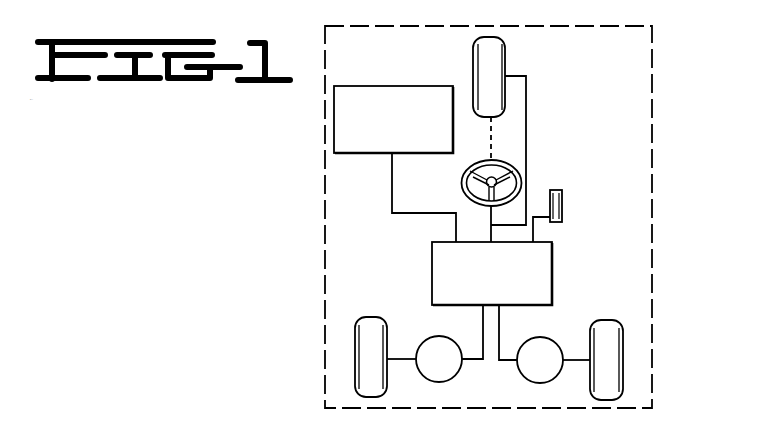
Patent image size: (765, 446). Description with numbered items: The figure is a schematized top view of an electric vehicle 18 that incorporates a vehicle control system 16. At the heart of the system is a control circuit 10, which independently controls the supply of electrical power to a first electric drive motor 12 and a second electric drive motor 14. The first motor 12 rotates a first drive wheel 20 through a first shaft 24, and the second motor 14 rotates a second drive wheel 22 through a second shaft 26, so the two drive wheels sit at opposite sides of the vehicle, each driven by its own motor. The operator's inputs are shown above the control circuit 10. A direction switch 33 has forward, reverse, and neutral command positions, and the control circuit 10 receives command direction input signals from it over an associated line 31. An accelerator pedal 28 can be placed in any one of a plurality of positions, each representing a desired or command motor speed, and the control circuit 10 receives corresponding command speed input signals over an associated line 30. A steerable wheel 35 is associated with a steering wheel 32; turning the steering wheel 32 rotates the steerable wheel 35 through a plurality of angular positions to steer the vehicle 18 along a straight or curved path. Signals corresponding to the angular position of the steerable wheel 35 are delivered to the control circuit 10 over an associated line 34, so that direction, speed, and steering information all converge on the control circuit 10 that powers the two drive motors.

The control circuit 10 is at (557, 276).
The first electric drive motor 12 is at (535, 337).
The second electric drive motor 14 is at (435, 337).
The vehicle control system 16 is at (556, 173).
The electric vehicle 18 is at (652, 172).
The first drive wheel 20 is at (623, 338).
The second drive wheel 22 is at (355, 330).
The first shaft 24 is at (580, 360).
The second shaft 26 is at (397, 359).
The accelerator pedal 28 is at (562, 202).
The line 30 is at (533, 230).
The line 31 is at (408, 215).
The steering wheel 32 is at (462, 183).
The direction switch 33 is at (362, 86).
The line 34 is at (526, 142).
The steerable wheel 35 is at (505, 55).